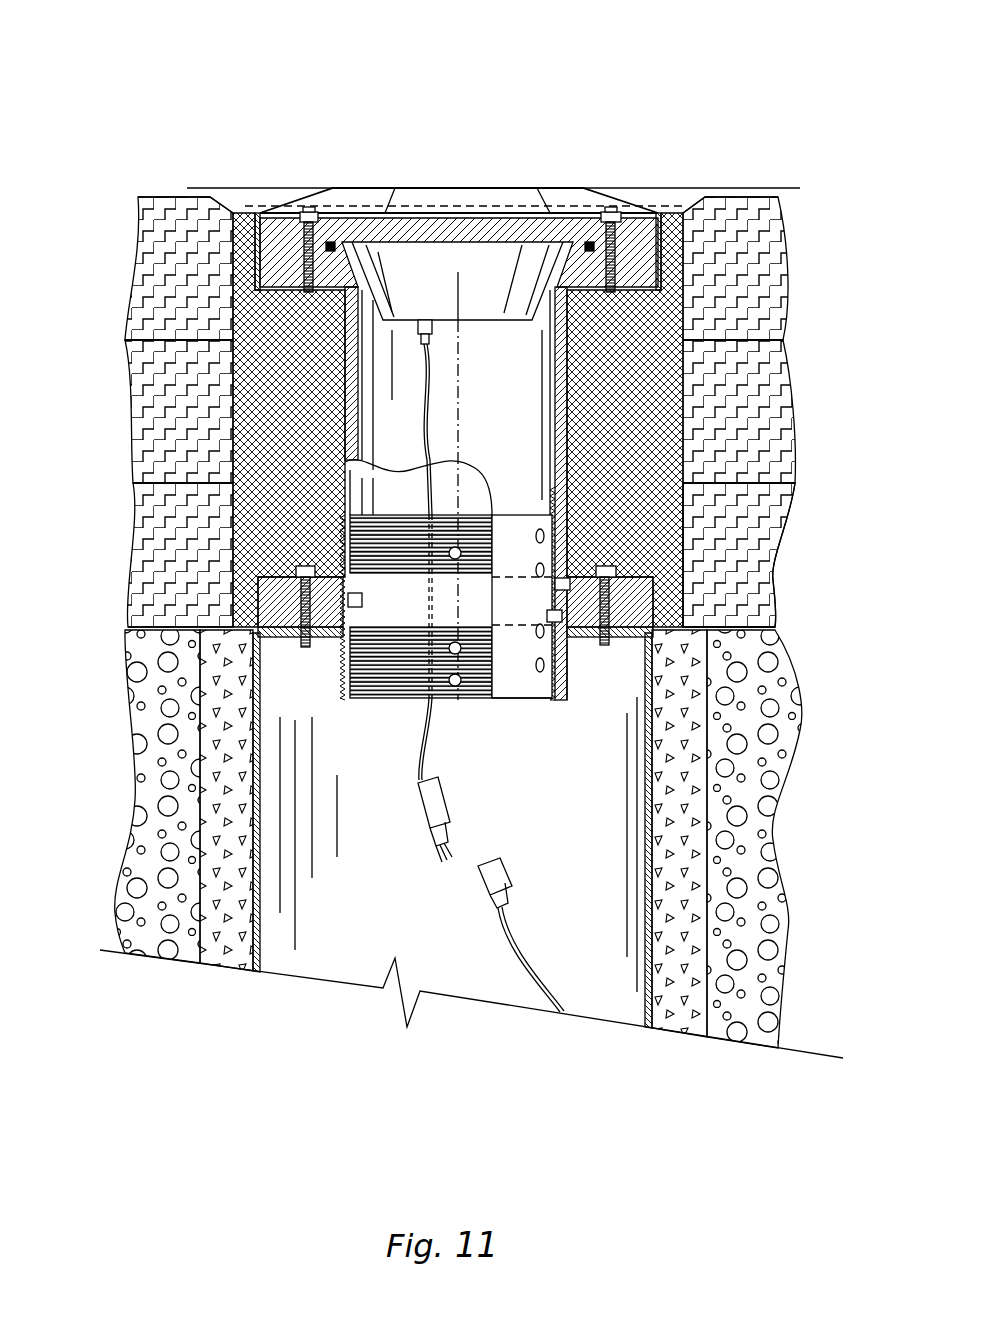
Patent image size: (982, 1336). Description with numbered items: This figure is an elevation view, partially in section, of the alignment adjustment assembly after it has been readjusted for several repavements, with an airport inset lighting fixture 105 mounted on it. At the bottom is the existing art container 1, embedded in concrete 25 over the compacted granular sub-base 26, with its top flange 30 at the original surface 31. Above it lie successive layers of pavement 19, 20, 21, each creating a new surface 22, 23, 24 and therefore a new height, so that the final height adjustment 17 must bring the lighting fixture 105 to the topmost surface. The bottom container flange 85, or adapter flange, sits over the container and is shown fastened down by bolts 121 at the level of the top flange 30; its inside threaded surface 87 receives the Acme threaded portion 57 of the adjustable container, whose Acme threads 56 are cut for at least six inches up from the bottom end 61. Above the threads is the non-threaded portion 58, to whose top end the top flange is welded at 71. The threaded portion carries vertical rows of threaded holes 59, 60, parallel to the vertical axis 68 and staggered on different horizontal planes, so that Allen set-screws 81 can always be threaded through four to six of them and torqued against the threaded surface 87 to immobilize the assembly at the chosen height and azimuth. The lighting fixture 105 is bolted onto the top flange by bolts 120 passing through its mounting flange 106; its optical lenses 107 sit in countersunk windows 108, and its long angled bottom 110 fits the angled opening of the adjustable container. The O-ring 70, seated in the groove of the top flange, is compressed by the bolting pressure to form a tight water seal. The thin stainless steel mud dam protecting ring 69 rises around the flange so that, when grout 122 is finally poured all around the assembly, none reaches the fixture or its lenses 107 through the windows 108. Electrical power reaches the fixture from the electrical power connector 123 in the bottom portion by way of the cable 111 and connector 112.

The existing art container 1 is at (262, 955).
The final height adjustment 17 is at (180, 195).
The pavement layer 19 is at (140, 560).
The pavement layer 20 is at (140, 412).
The pavement layer 21 is at (142, 280).
The surface 22 is at (140, 482).
The surface 23 is at (140, 342).
The surface 24 is at (142, 202).
The concrete 25 is at (215, 745).
The compacted granular sub-base 26 is at (130, 840).
The top flange 30 is at (340, 645).
The surface 31 is at (150, 627).
The Acme threads 56 is at (590, 645).
The Acme threaded portion 57 is at (578, 660).
The non-threaded portion 58 is at (358, 395).
The threaded holes 59 is at (536, 535).
The threaded holes 60 is at (455, 632).
The bottom end 61 is at (553, 700).
The vertical axis 68 is at (458, 420).
The mud dam protecting ring 69 is at (254, 212).
The O-ring 70 is at (323, 212).
The weld 71 is at (434, 328).
The Allen set-screw 81 is at (365, 600).
The bottom container flange 85 is at (643, 560).
The inside threaded surface 87 is at (362, 620).
The lighting fixture 105 is at (485, 190).
The mounting flange 106 is at (456, 242).
The optical lenses 107 is at (548, 200).
The countersunk windows 108 is at (368, 200).
The angled bottom 110 is at (430, 279).
The cable 111 is at (436, 392).
The connector 112 is at (452, 818).
The bolts 120 is at (290, 212).
The lower bolt 121 is at (310, 648).
The grout 122 is at (240, 213).
The electrical power connector 123 is at (480, 875).